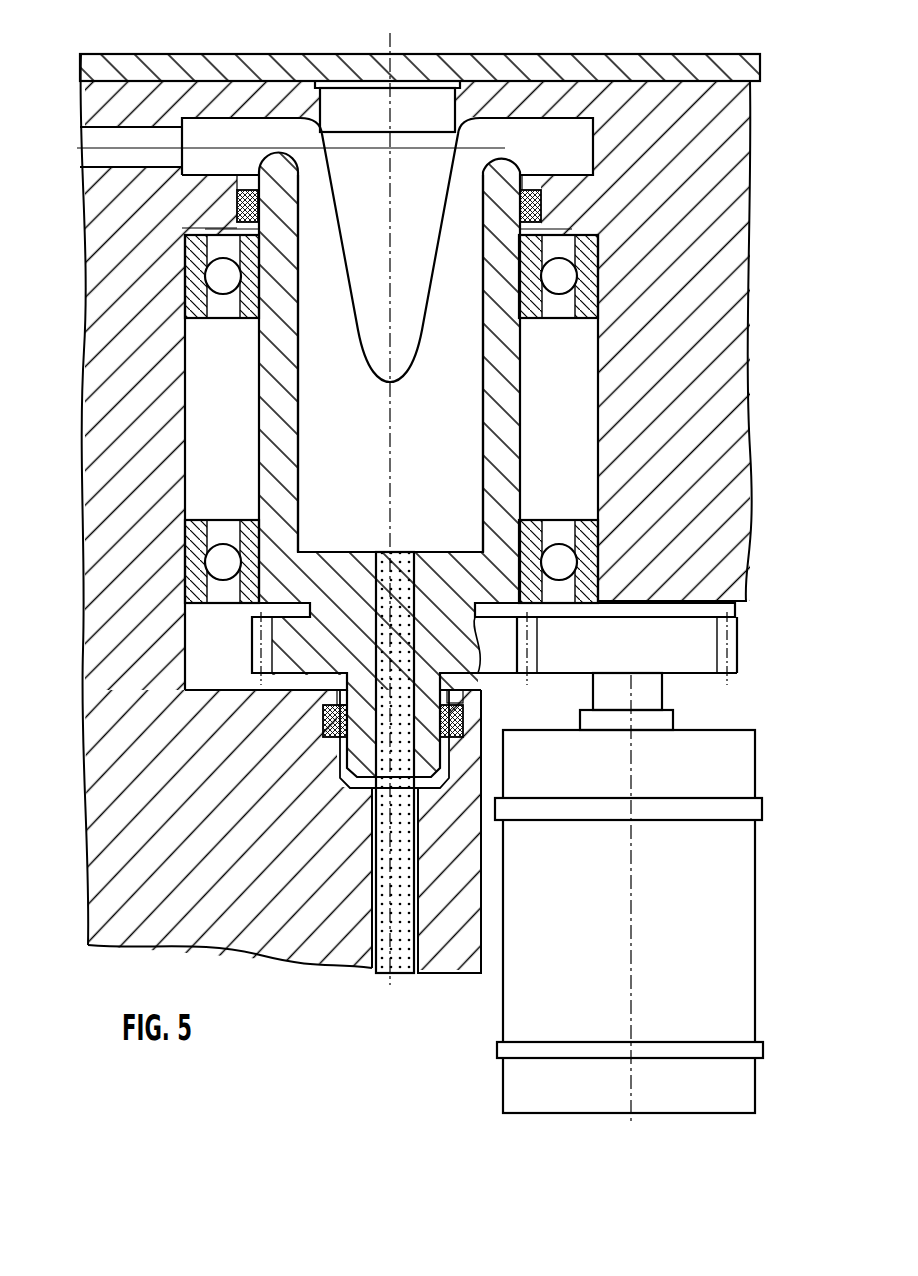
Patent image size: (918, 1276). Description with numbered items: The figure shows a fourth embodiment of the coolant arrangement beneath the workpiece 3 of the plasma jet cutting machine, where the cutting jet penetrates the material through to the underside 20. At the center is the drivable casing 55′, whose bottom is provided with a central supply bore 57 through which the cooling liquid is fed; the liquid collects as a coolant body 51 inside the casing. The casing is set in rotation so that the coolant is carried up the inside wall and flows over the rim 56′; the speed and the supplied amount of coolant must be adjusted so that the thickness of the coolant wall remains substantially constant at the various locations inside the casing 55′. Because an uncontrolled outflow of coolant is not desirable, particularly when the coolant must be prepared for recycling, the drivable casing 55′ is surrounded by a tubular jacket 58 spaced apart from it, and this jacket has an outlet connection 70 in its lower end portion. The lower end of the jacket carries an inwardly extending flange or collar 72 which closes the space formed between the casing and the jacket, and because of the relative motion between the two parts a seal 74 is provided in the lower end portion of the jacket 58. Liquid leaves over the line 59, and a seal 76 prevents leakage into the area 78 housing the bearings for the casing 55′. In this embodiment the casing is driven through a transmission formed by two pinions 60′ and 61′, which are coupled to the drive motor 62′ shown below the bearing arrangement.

The workpiece 3 is at (670, 66).
The underside of the workpiece 20 is at (418, 82).
The crucible 51 is at (454, 236).
The drivable casing 55′ is at (297, 578).
The rim 56′ is at (278, 176).
The central supply bore 57 is at (383, 737).
The tubular jacket 58 is at (117, 248).
The line 59 is at (119, 135).
The pinion 60′ is at (495, 652).
The pinion 61′ is at (693, 658).
The drive motor 62′ is at (522, 1088).
The outlet connection 70 is at (350, 968).
The inwardly extending flange or collar 72 is at (313, 837).
The seal 74 is at (355, 715).
The upper seal 76 is at (258, 201).
The bearing area 78 is at (231, 390).